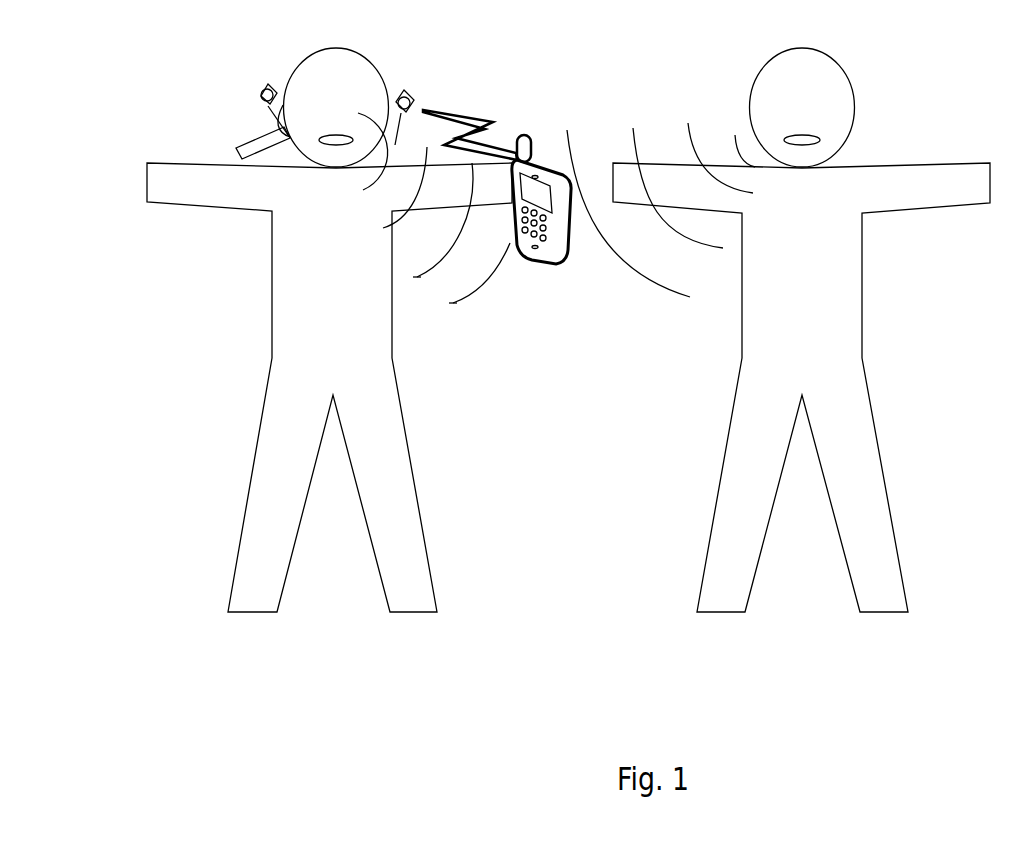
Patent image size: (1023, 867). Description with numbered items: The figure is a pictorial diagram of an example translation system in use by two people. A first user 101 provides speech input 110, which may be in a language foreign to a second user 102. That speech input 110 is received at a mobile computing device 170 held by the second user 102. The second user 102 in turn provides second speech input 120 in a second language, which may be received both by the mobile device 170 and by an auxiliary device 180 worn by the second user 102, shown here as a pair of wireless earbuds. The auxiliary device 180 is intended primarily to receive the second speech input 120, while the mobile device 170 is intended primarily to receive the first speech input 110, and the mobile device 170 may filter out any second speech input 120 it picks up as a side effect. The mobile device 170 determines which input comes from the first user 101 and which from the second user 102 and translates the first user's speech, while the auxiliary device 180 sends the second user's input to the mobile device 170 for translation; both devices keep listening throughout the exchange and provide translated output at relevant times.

The first user 101 is at (801, 330).
The second user 102 is at (329, 330).
The speech input 110 is at (633, 128).
The second speech input 120 is at (463, 276).
The mobile computing device 170 is at (567, 267).
The auxiliary device 180 is at (260, 83).